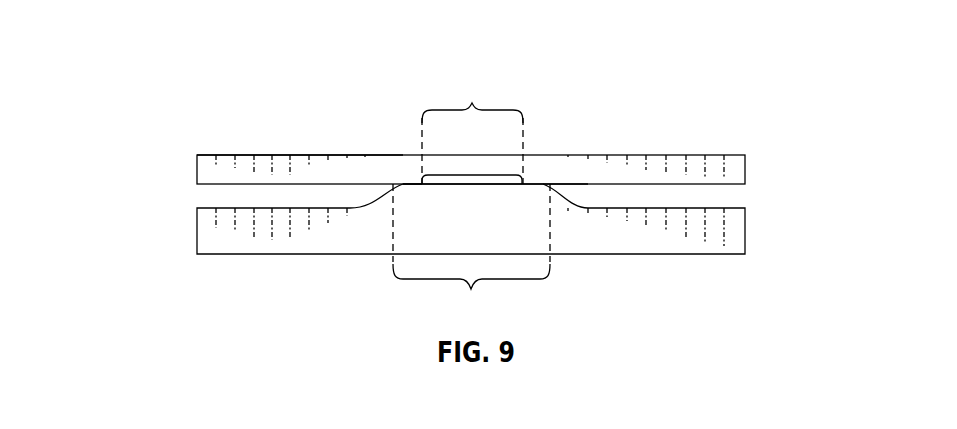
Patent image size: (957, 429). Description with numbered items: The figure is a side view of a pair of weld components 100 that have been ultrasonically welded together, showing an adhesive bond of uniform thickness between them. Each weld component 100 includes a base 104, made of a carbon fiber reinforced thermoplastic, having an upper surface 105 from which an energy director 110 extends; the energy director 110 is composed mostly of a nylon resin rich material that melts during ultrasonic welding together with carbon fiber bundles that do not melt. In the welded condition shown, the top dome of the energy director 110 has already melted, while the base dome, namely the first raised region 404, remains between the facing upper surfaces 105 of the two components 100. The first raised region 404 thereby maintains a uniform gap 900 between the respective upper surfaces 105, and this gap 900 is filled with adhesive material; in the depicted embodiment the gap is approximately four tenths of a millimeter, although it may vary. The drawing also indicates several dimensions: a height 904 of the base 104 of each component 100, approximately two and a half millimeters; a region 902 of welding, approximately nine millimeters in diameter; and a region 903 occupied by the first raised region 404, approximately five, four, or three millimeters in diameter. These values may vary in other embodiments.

The weld component 100 is at (736, 153).
The base 104 is at (735, 168).
The upper surface 105 is at (573, 203).
The energy director 110 is at (416, 182).
The first raised region 404 is at (455, 178).
The uniform gap 900 is at (320, 195).
The region of welding 902 is at (471, 256).
The region occupied by the first raised region 903 is at (472, 128).
The height of the base 904 is at (190, 208).